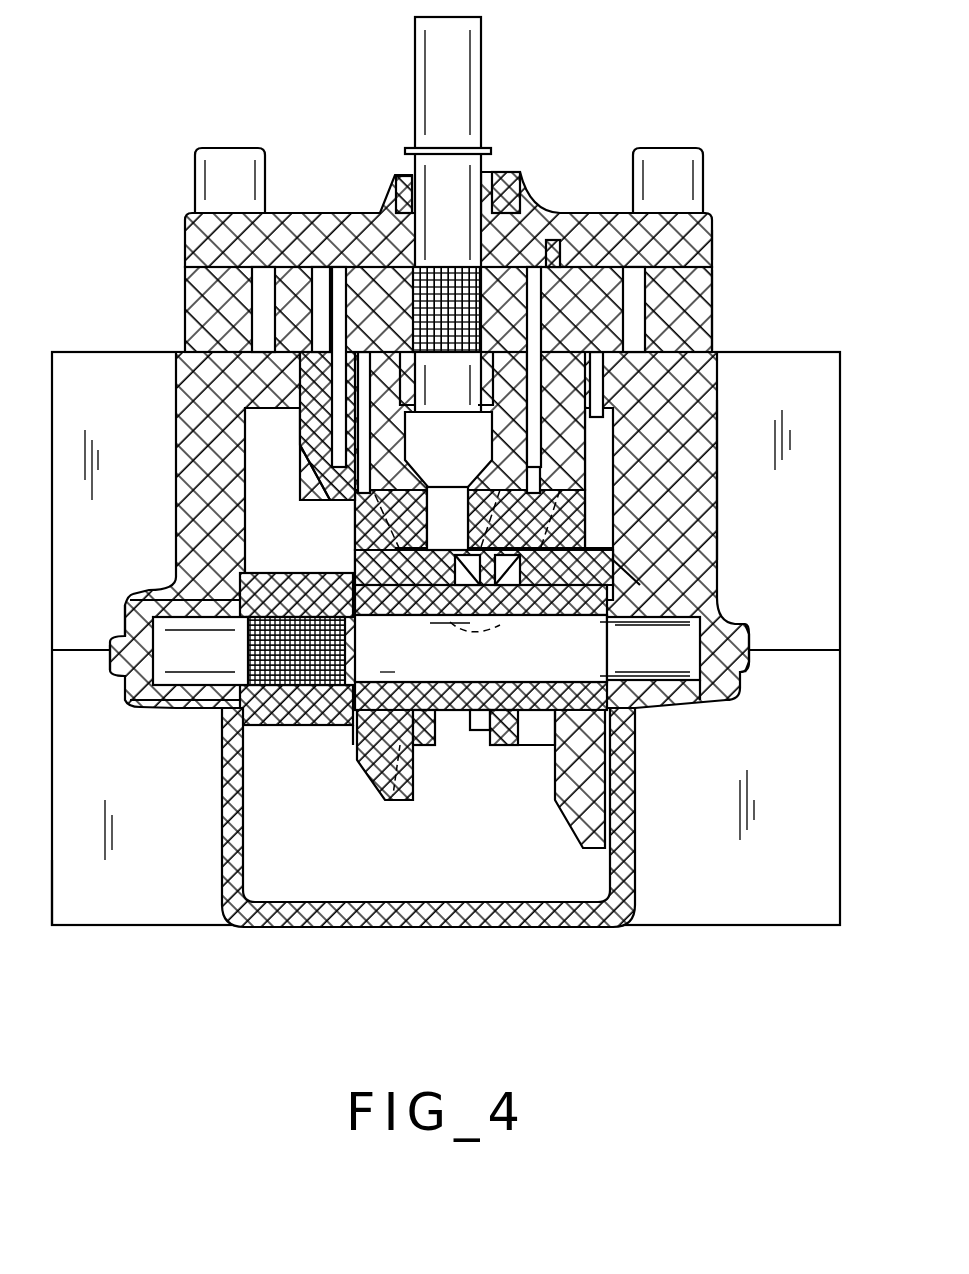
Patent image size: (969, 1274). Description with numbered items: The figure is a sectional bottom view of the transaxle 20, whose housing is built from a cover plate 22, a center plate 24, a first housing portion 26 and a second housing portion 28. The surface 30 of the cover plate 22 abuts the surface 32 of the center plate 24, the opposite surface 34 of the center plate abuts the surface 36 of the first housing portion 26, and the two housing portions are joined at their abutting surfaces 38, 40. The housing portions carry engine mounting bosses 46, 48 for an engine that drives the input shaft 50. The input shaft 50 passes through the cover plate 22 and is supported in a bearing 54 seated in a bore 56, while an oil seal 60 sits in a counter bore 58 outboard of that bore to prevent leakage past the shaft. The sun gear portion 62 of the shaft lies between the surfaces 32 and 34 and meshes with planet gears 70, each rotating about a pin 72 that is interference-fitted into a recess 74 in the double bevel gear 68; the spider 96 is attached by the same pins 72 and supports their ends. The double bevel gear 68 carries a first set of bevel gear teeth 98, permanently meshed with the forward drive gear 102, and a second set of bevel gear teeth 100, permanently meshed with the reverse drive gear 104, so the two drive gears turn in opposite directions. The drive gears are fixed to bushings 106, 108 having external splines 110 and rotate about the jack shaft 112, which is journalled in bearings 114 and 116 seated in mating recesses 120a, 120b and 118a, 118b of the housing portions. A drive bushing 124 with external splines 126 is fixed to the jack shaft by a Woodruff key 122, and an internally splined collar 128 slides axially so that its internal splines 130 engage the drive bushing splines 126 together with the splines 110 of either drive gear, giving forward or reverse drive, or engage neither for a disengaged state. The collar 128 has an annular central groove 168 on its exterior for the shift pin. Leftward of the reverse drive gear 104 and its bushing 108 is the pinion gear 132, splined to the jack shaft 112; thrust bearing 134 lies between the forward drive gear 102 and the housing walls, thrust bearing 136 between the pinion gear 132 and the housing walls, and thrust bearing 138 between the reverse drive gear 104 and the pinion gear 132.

The transaxle 20 is at (110, 205).
The cover plate 22 is at (710, 232).
The center plate 24 is at (195, 318).
The first housing portion 26 is at (720, 517).
The second housing portion 28 is at (635, 820).
The surface 30 is at (712, 297).
The surface 32 is at (712, 252).
The surface 34 is at (190, 372).
The surface 36 is at (185, 347).
The abutting surface 38 is at (118, 682).
The abutting surface 40 is at (125, 642).
The engine mounting boss 46 is at (52, 380).
The engine mounting boss 48 is at (52, 832).
The input shaft 50 is at (480, 52).
The bearing 54 is at (515, 212).
The bore 56 is at (420, 234).
The counter bore 58 is at (492, 154).
The oil seal 60 is at (405, 180).
The sun gear portion 62 is at (430, 292).
The double bevel gear 68 is at (317, 510).
The planet gears 70 is at (330, 314).
The pin 72 is at (345, 268).
The recess 74 is at (522, 492).
The spider 96 is at (556, 264).
The first set of bevel gear teeth 98 is at (307, 467).
The second set of bevel gear teeth 100 is at (500, 532).
The forward drive gear 102 is at (600, 777).
The reverse drive gear 104 is at (390, 807).
The bushing 106 is at (540, 710).
The bushing 108 is at (425, 712).
The external splines 110 is at (481, 598).
The jack shaft 112 is at (735, 637).
The bearing 114 is at (688, 712).
The bearing 116 is at (162, 712).
The recess 118a is at (178, 627).
The recess 118b is at (225, 722).
The recess 120a is at (640, 622).
The recess 120b is at (640, 677).
The Woodruff key 122 is at (496, 644).
The drive bushing 124 is at (497, 684).
The external splines 126 is at (447, 624).
The collar 128 is at (480, 747).
The internal splines 130 is at (463, 702).
The pinion gear 132 is at (312, 730).
The thrust bearing 134 is at (675, 562).
The thrust bearing 136 is at (260, 580).
The thrust bearing 138 is at (353, 747).
The annular central groove 168 is at (493, 750).